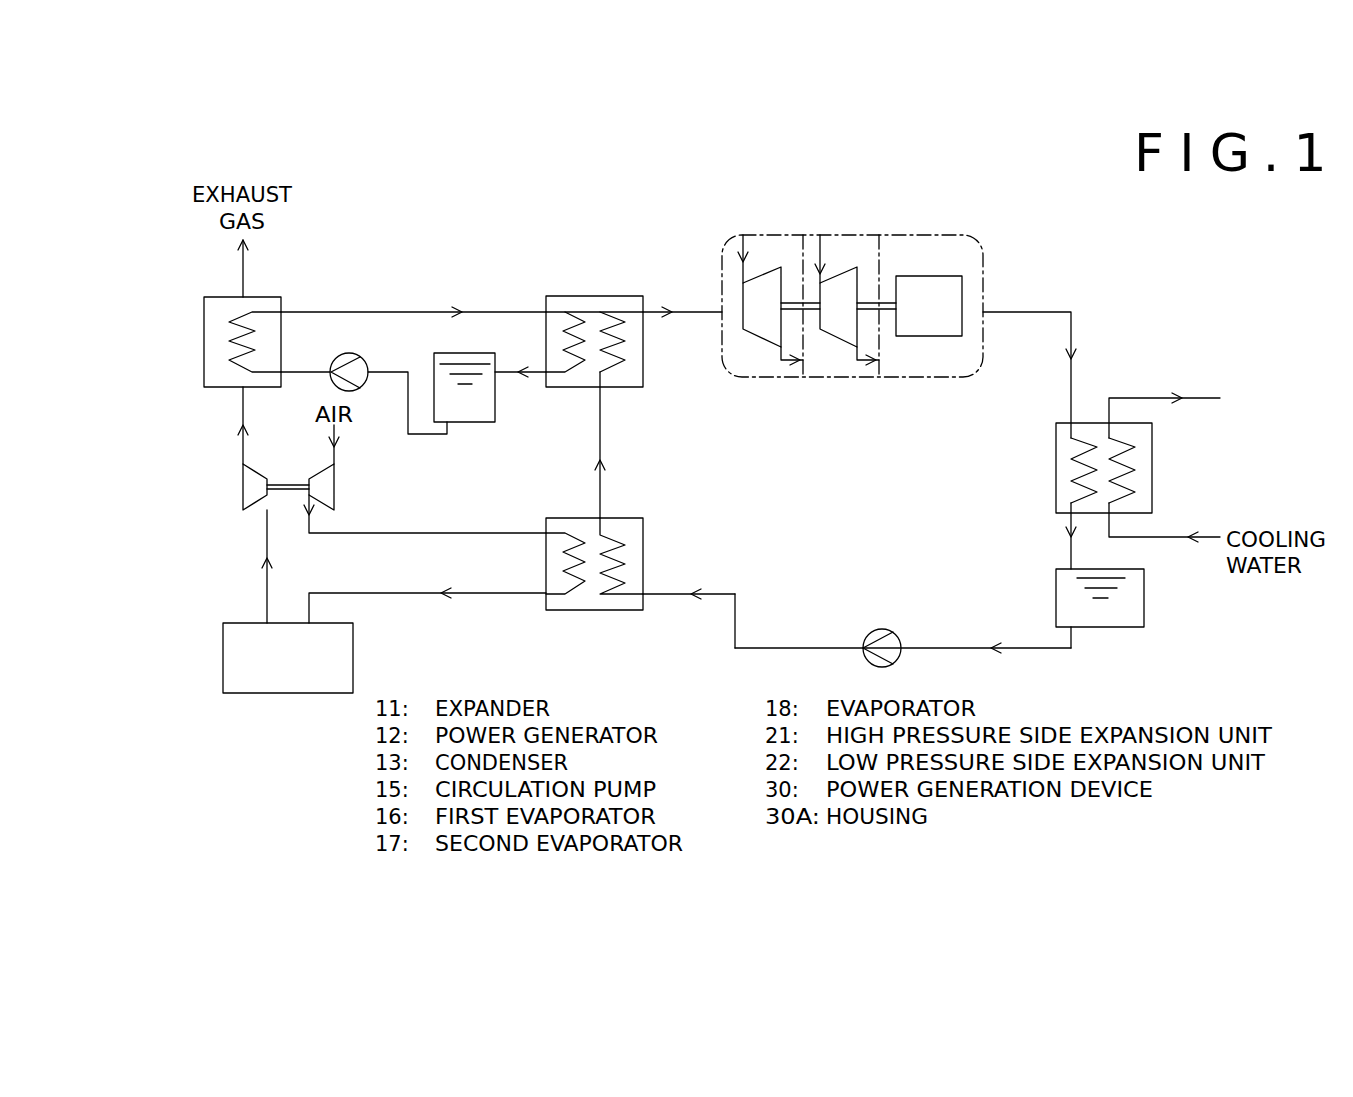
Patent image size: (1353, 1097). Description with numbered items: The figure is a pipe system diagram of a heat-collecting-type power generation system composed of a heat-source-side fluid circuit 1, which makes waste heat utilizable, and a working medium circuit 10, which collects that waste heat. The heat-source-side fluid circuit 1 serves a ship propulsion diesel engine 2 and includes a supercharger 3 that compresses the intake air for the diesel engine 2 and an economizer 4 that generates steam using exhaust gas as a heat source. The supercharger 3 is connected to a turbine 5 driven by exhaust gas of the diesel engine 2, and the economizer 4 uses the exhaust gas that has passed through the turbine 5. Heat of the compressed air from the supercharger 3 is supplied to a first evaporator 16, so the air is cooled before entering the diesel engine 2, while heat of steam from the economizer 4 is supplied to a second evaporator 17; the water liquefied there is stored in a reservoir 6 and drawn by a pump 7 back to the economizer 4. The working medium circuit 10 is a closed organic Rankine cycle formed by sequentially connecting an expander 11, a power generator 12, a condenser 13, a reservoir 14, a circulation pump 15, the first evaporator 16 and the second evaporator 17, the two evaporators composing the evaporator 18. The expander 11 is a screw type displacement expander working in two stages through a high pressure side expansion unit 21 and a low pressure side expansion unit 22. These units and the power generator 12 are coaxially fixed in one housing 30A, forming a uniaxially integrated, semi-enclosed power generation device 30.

The heat-source-side fluid circuit 1 is at (452, 240).
The diesel engine 2 is at (283, 693).
The supercharger 3 is at (334, 487).
The economizer 4 is at (276, 297).
The turbine 5 is at (243, 487).
The reservoir 6 is at (470, 422).
The pump 7 is at (357, 356).
The working medium circuit 10 is at (1107, 272).
The expander 11 is at (812, 247).
The power generator 12 is at (945, 276).
The condenser 13 is at (1152, 466).
The reservoir 14 is at (1112, 627).
The circulation pump 15 is at (883, 629).
The first evaporator 16 is at (619, 564).
The second evaporator 17 is at (643, 375).
The evaporator 18 is at (644, 453).
The high pressure side expansion unit 21 is at (766, 268).
The low pressure side expansion unit 22 is at (847, 268).
The power generation device 30 is at (904, 253).
The housing 30A is at (983, 268).